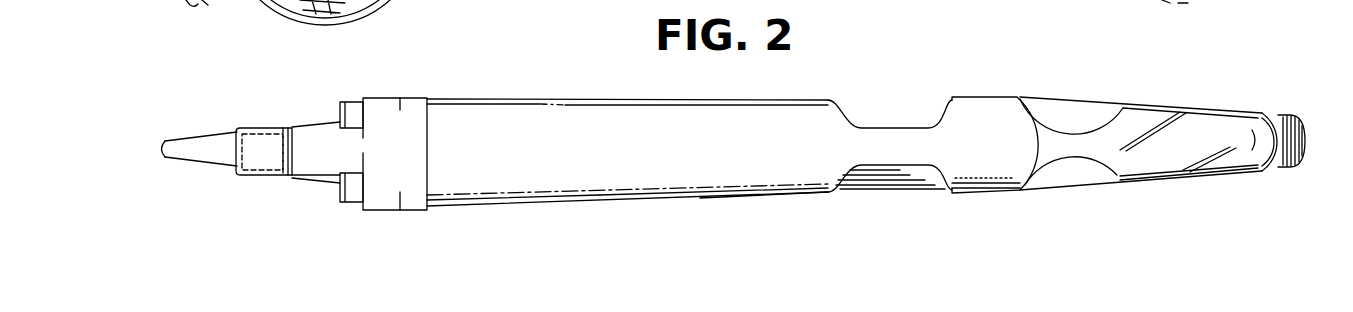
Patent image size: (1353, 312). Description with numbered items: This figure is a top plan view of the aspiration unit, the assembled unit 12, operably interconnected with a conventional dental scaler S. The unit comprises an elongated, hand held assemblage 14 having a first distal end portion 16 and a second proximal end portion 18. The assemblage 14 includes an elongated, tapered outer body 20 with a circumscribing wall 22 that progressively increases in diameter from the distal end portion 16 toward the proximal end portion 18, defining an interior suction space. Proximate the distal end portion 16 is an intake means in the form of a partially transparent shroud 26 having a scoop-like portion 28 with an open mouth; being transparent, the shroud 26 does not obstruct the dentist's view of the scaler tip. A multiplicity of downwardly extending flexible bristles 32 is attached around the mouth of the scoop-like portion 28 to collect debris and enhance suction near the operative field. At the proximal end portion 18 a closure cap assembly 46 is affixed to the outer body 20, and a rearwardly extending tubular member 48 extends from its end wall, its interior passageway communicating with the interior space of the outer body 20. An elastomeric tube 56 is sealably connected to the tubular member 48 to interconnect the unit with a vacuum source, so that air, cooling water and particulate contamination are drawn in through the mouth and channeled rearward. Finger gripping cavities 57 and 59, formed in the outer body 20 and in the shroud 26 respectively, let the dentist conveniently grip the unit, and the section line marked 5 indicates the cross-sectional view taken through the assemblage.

The section line 5- 5 is at (282, 120).
The assembled unit 12 is at (493, 87).
The hand held assemblage 14 is at (583, 120).
The first distal end portion 16 is at (983, 100).
The second proximal end portion 18 is at (435, 182).
The outer body 20 is at (635, 172).
The circumscribing wall 22 is at (713, 197).
The shroud 26 is at (1150, 118).
The scoop-like portion 28 is at (1267, 140).
The bristles 32 is at (1283, 115).
The closure cap assembly 46 is at (408, 107).
The tubular member 48 is at (307, 140).
The elastomeric tube 56 is at (222, 122).
The finger gripping cavity 57 is at (888, 178).
The finger gripping cavity 59 is at (1085, 170).
The scaler S is at (323, 122).